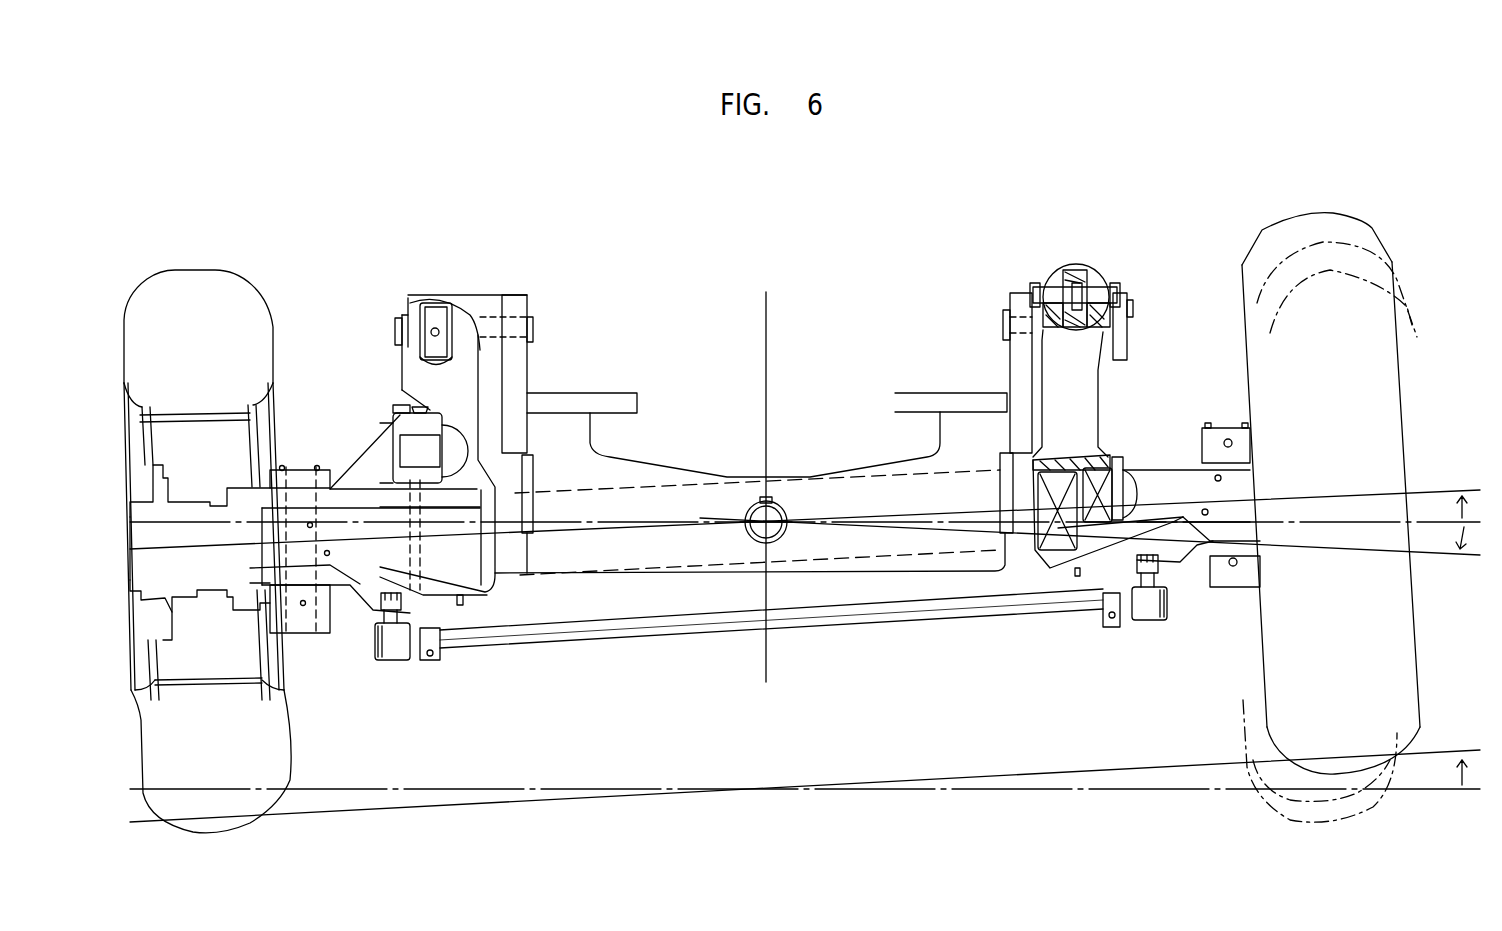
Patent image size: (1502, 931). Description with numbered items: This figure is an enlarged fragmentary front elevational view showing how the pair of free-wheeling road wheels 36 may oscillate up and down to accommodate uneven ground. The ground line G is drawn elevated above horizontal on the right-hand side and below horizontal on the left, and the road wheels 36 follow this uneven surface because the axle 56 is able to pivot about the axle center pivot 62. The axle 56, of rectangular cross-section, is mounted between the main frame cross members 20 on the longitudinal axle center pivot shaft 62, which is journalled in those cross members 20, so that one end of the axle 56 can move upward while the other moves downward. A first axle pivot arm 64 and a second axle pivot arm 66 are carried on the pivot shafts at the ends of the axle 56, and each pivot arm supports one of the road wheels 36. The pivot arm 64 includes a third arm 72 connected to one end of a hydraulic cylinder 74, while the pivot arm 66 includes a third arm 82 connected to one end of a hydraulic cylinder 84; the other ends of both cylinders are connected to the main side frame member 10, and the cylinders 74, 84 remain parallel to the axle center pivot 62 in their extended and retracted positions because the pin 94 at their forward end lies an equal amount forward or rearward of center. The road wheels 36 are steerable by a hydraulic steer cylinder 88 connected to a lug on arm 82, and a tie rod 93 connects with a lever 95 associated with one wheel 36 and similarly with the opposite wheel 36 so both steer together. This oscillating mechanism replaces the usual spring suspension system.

The main side frame member 10 is at (536, 353).
The main frame cross member 20 is at (660, 462).
The free-wheeling road wheel 36 is at (266, 320).
The axle 56 is at (690, 487).
The axle center pivot shaft 62 is at (780, 512).
The first axle pivot arm 64 is at (1104, 540).
The second axle pivot arm 66 is at (462, 562).
The third arm 72 is at (1088, 383).
The hydraulic cylinder 74 is at (1058, 264).
The third arm 82 is at (400, 375).
The hydraulic cylinder 84 is at (445, 298).
The hydraulic steer cylinder 88 is at (455, 450).
The tie rod 93 is at (817, 637).
The pin 94 is at (1092, 300).
The lever 95 is at (367, 620).
The ground line G is at (413, 807).